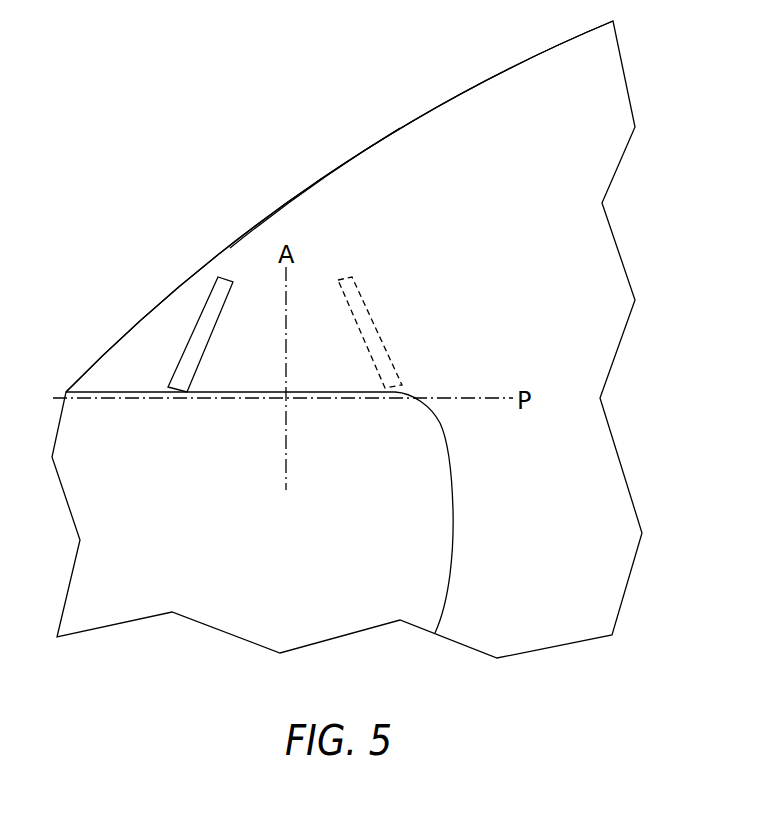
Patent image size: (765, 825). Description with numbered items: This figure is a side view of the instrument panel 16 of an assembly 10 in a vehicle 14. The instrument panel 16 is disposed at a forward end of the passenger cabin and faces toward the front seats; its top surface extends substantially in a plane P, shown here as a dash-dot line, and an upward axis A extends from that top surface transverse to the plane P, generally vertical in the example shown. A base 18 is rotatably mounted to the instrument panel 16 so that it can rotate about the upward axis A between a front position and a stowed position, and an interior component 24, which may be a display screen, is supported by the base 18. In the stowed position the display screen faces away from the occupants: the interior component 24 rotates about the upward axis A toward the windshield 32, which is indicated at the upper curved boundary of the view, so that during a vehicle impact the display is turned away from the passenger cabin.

The assembly 10 is at (507, 267).
The vehicle 14 is at (413, 98).
The instrument panel 16 is at (428, 422).
The base 18 is at (232, 392).
The interior component 24 is at (200, 318).
The windshield 32 is at (317, 182).